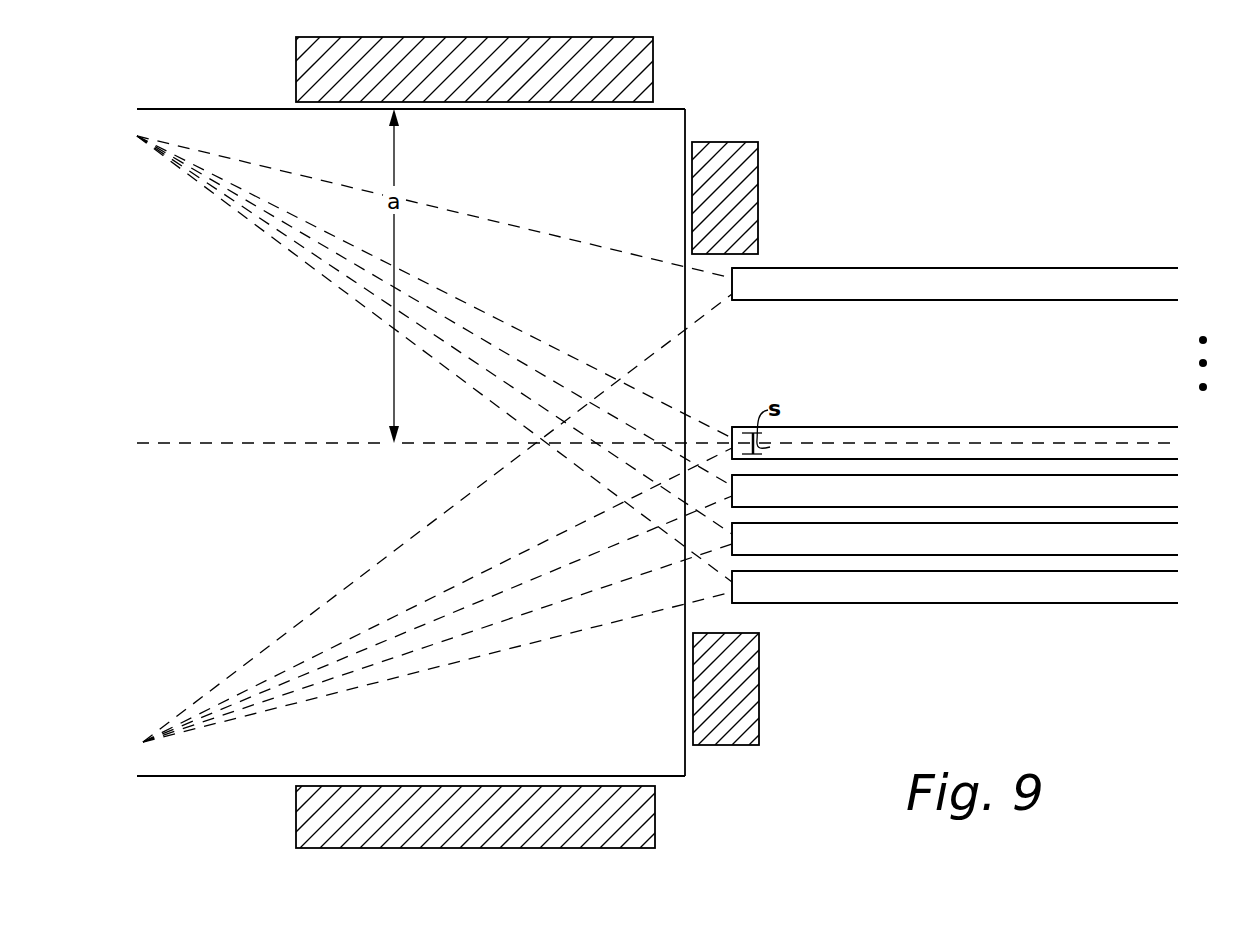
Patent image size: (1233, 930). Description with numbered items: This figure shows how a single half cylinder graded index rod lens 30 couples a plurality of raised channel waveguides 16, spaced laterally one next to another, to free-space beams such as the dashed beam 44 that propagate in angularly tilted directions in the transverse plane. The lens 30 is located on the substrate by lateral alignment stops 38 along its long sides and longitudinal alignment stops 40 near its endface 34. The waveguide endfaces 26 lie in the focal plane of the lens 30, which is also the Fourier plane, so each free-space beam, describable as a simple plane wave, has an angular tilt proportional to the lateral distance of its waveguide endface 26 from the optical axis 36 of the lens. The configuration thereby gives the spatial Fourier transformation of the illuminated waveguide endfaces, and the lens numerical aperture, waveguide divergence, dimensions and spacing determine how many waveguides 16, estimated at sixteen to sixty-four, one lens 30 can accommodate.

The raised channel waveguide 16 is at (990, 585).
The waveguide endface 26 is at (735, 286).
The half cylinder graded index rod lens 30 is at (182, 109).
The endface 34 is at (686, 121).
The optical axis 36 is at (220, 444).
The lateral alignment stop 38 is at (653, 78).
The longitudinal alignment stop 40 is at (758, 200).
The light rays 44 is at (538, 232).